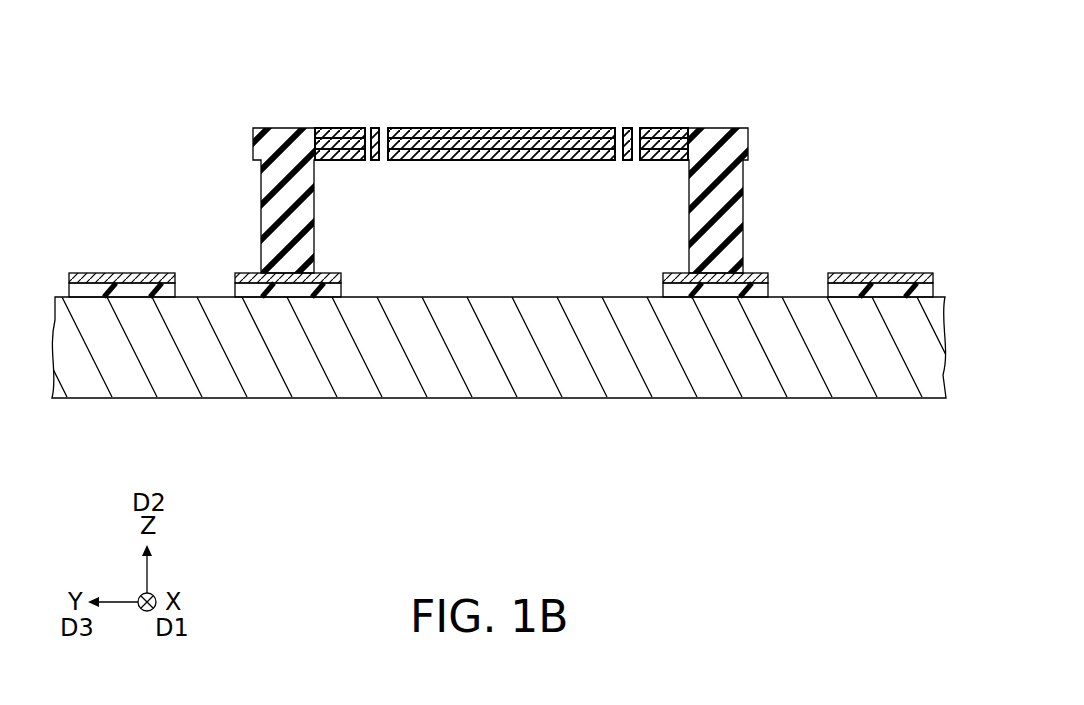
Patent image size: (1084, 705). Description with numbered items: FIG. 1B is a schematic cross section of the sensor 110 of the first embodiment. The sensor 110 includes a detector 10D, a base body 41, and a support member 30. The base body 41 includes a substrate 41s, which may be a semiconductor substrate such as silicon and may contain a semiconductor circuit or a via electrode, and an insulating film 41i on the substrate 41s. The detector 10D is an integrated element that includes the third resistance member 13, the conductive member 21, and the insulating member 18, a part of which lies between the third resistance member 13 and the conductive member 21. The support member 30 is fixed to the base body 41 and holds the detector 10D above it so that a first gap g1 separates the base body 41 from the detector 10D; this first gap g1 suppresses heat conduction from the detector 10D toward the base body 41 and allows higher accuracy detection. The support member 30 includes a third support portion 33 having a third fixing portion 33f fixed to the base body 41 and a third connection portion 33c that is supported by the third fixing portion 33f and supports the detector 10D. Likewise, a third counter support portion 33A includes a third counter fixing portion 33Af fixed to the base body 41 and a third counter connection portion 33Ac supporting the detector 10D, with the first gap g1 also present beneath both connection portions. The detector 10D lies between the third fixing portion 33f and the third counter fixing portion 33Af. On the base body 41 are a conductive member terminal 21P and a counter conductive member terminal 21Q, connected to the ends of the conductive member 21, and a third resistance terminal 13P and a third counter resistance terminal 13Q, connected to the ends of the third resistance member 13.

The support member 30 is at (160, 96).
The sensor 110 is at (864, 110).
The detector 10D is at (496, 100).
The insulating member 18 is at (461, 134).
The third resistance member 13 is at (513, 144).
The conductive member 21 is at (572, 154).
The third support portion 33 is at (301, 180).
The third fixing portion 33f is at (288, 135).
The third connection portion 33c is at (360, 130).
The third counter support portion 33A is at (713, 182).
The third counter connection portion 33Ac is at (628, 130).
The third counter fixing portion 33Af is at (718, 132).
The third resistance terminal 13P is at (110, 278).
The conductive member terminal 21P is at (252, 280).
The counter conductive member terminal 21Q is at (757, 280).
The third counter resistance terminal 13Q is at (888, 280).
The base body 41 is at (506, 386).
The substrate 41s is at (210, 345).
The insulating film 41i is at (290, 290).
The first gap g1 is at (538, 276).